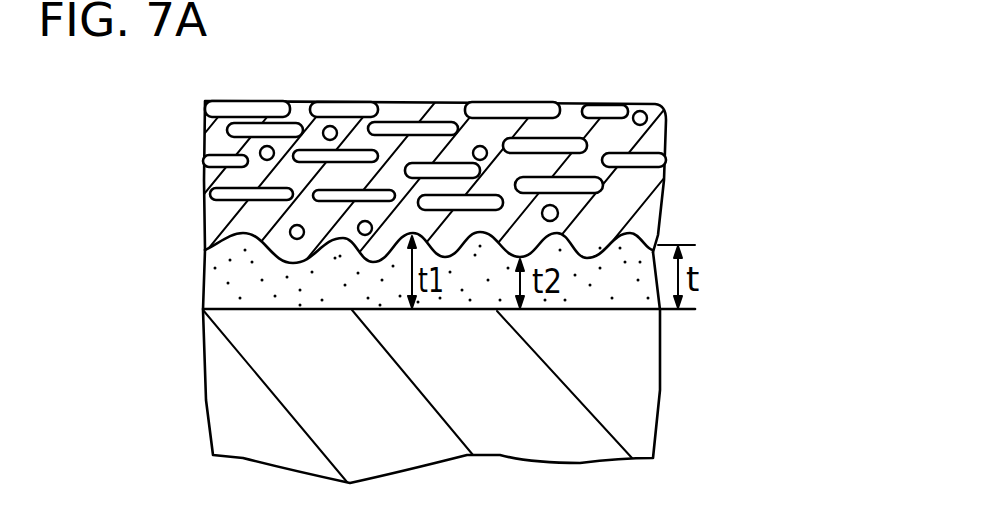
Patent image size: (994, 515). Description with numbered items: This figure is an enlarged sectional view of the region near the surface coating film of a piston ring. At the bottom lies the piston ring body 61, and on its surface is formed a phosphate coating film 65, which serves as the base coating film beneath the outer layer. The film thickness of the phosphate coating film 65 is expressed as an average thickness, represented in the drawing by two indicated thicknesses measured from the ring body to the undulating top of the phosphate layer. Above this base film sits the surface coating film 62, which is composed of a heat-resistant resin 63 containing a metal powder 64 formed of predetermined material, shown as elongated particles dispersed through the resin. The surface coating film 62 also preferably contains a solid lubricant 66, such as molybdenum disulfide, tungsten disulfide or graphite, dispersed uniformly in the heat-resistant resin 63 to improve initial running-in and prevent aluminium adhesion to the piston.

The piston ring body 61 is at (628, 342).
The surface coating film 62 is at (778, 63).
The heat-resistant resin 63 is at (628, 187).
The metal powder 64 is at (587, 146).
The phosphate coating film 65 is at (643, 233).
The solid lubricant 66 is at (645, 113).